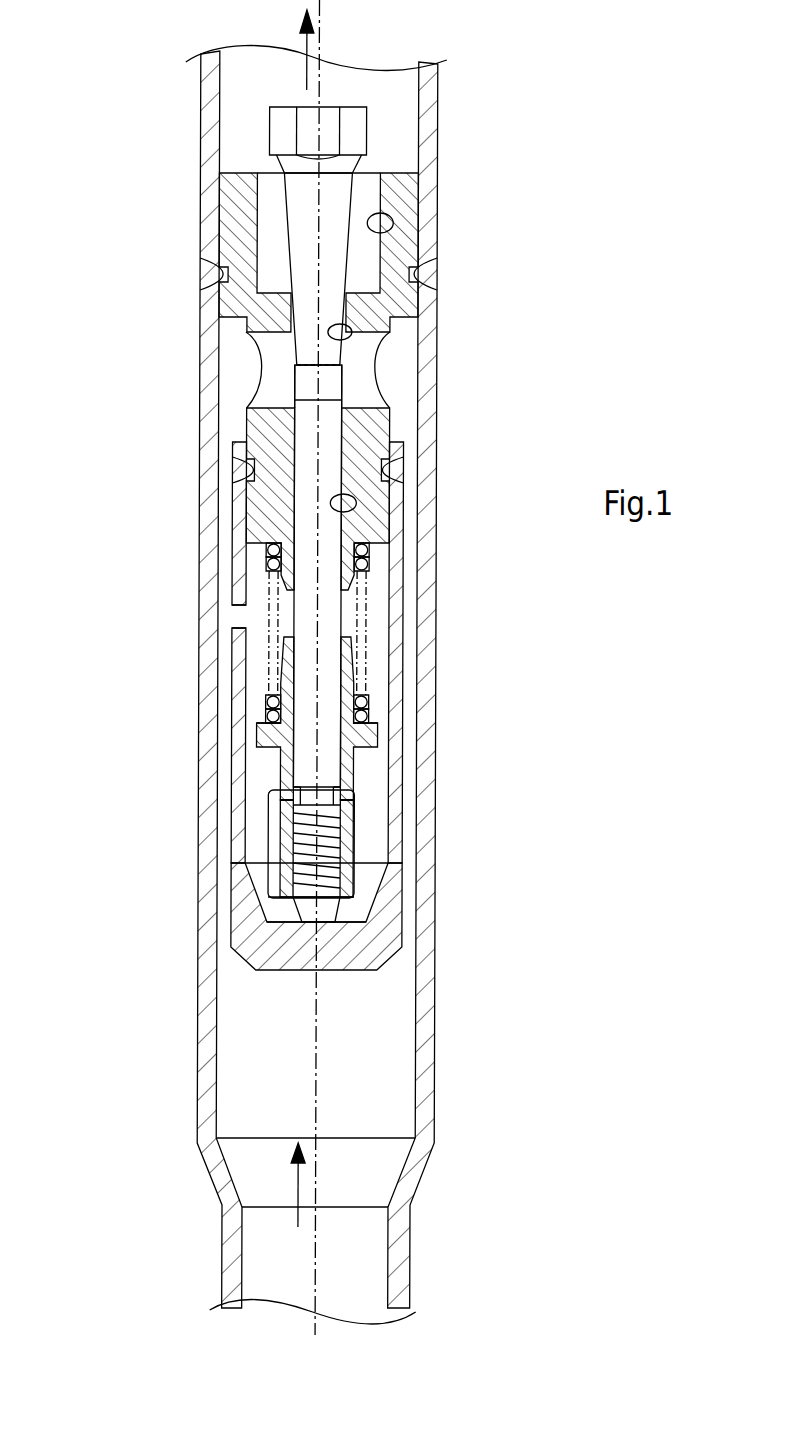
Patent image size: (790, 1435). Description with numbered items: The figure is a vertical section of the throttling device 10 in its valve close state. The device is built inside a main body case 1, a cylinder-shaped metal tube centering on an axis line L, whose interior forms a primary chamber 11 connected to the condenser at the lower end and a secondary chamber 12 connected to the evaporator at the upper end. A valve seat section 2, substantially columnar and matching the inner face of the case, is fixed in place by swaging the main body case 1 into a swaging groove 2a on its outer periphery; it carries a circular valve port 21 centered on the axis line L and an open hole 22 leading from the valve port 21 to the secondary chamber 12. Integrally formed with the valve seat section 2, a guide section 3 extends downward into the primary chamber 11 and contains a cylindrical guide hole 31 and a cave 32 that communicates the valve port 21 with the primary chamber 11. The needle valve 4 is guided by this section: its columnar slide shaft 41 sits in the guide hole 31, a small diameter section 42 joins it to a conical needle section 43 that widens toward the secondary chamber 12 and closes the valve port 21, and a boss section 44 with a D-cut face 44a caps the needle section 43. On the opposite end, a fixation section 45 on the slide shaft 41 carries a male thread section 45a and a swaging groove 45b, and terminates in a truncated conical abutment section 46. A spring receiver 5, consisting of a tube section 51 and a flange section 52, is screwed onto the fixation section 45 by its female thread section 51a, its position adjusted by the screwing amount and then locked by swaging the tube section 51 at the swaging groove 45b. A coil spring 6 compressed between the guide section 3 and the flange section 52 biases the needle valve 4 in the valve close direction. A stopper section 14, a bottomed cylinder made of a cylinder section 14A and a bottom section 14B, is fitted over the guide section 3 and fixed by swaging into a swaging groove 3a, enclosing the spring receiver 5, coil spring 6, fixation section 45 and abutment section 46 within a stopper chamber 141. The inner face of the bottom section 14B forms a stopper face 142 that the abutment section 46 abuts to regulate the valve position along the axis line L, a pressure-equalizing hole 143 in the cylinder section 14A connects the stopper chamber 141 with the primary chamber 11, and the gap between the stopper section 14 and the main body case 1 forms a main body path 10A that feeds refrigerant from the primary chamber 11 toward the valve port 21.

The throttling device 10 is at (600, 84).
The main body case 1 is at (447, 175).
The secondary chamber 12 is at (242, 114).
The primary chamber 11 is at (241, 1016).
The main body path 10A is at (227, 725).
The valve seat section 2 is at (427, 217).
The swaging groove 2a is at (418, 270).
The valve port 21 is at (353, 332).
The open hole 22 is at (394, 224).
The guide section 3 is at (400, 433).
The swaging groove 3a is at (386, 469).
The guide hole 31 is at (358, 503).
The cave 32 is at (365, 408).
The needle valve 4 is at (356, 364).
The slide shaft 41 is at (305, 600).
The small diameter section 42 is at (306, 384).
The needle section 43 is at (297, 249).
The boss section 44 is at (277, 131).
The D-cut face 44a is at (308, 121).
The fixation section 45 is at (271, 844).
The male thread section 45a is at (330, 860).
The swaging groove 45b is at (339, 798).
The abutment section 46 is at (306, 913).
The spring receiver 5 is at (392, 737).
The tube section 51 is at (353, 767).
The female thread section 51a is at (358, 861).
The flange section 52 is at (382, 722).
The coil spring 6 is at (374, 563).
The stopper section 14 is at (415, 657).
The cylinder section 14A is at (395, 623).
The bottom section 14B is at (386, 946).
The stopper chamber 141 is at (262, 777).
The stopper face 142 is at (368, 908).
The pressure-equalizing hole 143 is at (242, 619).
The axis line L is at (324, 1055).